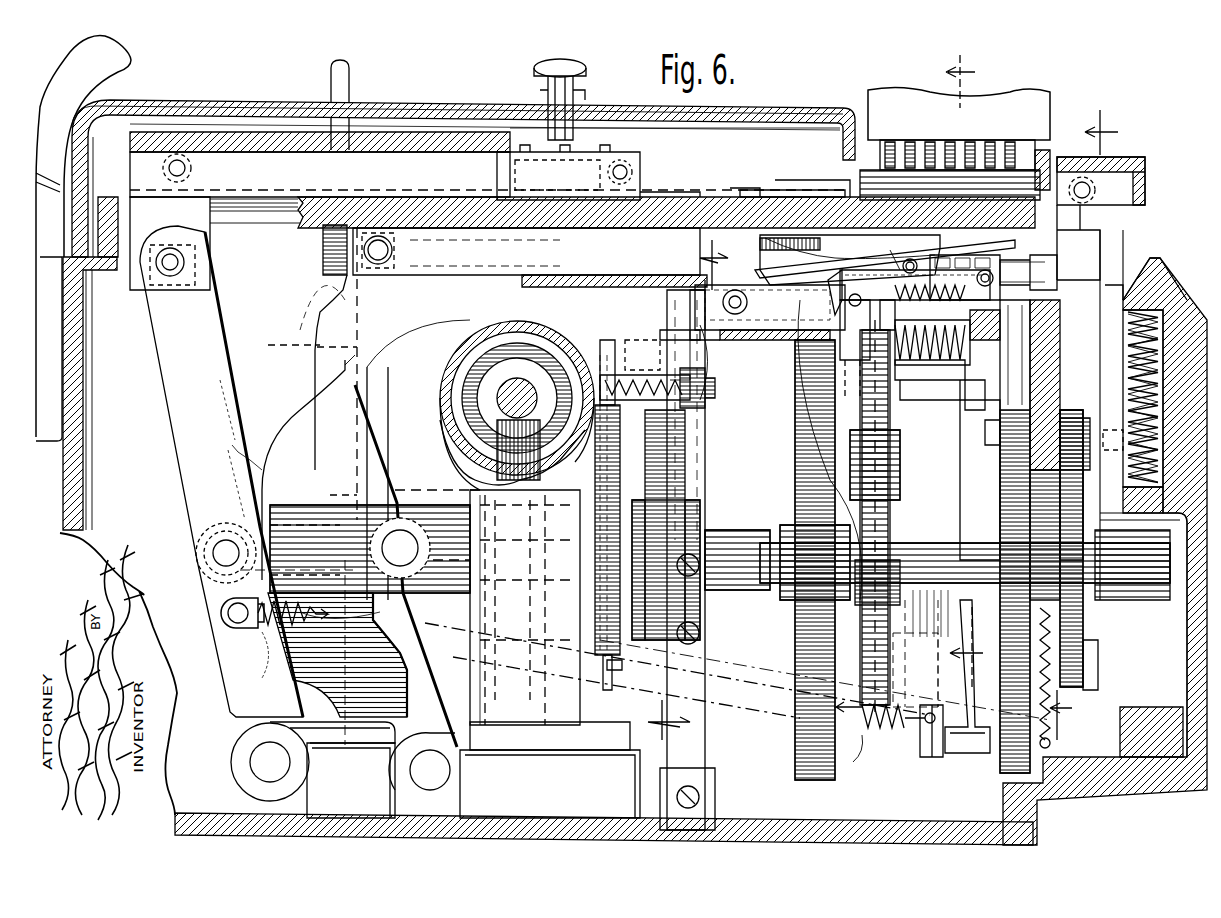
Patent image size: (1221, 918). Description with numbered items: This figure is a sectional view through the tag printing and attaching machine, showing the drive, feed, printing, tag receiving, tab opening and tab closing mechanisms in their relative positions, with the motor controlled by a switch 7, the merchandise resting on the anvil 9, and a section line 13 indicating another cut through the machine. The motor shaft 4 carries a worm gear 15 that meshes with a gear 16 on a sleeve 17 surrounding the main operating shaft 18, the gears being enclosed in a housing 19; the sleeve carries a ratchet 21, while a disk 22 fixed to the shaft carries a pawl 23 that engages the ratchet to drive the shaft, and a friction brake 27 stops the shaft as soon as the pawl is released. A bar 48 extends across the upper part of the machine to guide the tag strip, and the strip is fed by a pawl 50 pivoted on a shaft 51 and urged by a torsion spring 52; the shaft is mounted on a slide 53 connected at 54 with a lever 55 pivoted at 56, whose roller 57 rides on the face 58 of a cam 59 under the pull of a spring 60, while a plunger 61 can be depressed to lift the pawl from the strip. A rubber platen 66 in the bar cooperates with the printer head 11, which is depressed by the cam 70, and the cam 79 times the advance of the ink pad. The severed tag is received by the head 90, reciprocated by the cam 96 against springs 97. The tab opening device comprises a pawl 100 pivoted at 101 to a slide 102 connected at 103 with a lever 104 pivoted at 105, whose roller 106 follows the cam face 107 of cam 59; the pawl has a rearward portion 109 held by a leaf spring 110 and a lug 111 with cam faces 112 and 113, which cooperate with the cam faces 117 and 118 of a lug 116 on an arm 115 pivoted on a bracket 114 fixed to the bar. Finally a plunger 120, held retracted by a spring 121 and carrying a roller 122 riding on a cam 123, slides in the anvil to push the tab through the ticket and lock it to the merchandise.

The shaft 4 is at (480, 388).
The switch 7 is at (971, 404).
The anvil 9 is at (1153, 385).
The printer head 11 is at (955, 143).
The section line 13 is at (1095, 425).
The worm gear 15 is at (490, 415).
The gear 16 is at (490, 455).
The sleeve 17 is at (548, 518).
The main operating shaft 18 is at (725, 540).
The housing 19 is at (455, 350).
The ratchet 21 is at (600, 620).
The disk 22 is at (680, 490).
The pawl 23 is at (612, 668).
The friction brake 27 is at (700, 600).
The bar 48 is at (652, 198).
The pawl 50 is at (785, 196).
The shaft 51 is at (622, 166).
The torsion spring 52 is at (630, 176).
The slide 53 is at (465, 140).
The connection 54 is at (200, 259).
The lever 55 is at (205, 380).
The pivot 56 is at (250, 764).
The roller 57 is at (195, 538).
The cam face 58 is at (262, 458).
The cam 59 is at (300, 428).
The spring 60 is at (255, 650).
The plunger 61 is at (575, 88).
The rubber platen 66 is at (896, 262).
The cam 70 is at (880, 485).
The cam 79 is at (808, 632).
The head 90 is at (1125, 165).
The cam 96 is at (1012, 497).
The springs 97 is at (1085, 652).
The pawl 100 is at (992, 254).
The pivot 101 is at (910, 258).
The slide 102 is at (495, 277).
The connection 103 is at (392, 250).
The lever 104 is at (400, 300).
The pivot 105 is at (450, 770).
The roller 106 is at (418, 548).
The cam face 107 is at (380, 482).
The rearwardly extending portion 109 is at (850, 265).
The leaf spring 110 is at (770, 307).
The lug 111 is at (848, 302).
The cam face 112 is at (845, 345).
The cam face 113 is at (823, 290).
The bracket 114 is at (706, 350).
The arm 115 is at (800, 340).
The lug 116 is at (864, 350).
The cam face 117 is at (915, 282).
The cam face 118 is at (947, 325).
The plunger 120 is at (1145, 295).
The spring 121 is at (1127, 390).
The roller 122 is at (1065, 448).
The cam 123 is at (1085, 636).